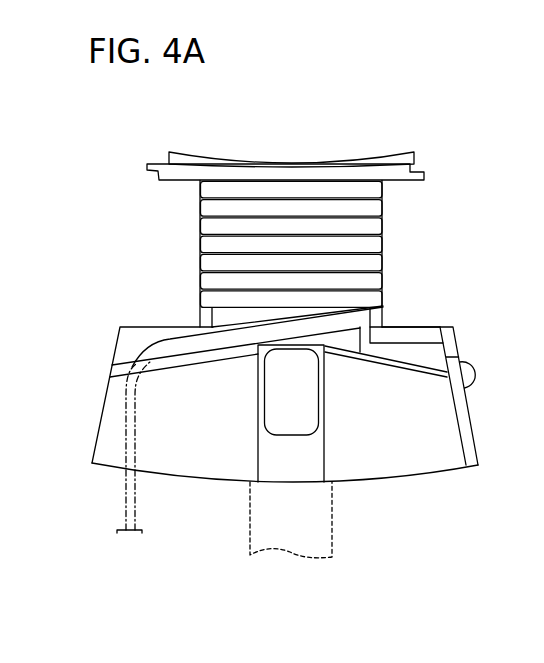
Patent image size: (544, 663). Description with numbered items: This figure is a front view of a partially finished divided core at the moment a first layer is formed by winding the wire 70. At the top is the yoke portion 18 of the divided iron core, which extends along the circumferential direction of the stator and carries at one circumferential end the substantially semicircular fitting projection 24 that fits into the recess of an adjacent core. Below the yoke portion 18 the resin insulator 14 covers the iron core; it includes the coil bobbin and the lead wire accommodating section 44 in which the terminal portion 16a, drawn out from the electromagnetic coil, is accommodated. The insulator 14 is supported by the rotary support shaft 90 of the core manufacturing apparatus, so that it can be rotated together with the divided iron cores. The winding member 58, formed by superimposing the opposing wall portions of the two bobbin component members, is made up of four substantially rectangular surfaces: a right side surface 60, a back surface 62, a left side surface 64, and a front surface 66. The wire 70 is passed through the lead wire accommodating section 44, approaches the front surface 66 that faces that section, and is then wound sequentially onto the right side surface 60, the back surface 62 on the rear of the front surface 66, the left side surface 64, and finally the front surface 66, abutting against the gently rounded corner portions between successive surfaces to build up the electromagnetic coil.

The insulator 14 is at (453, 327).
The terminal portion 16a is at (124, 499).
The yoke portion 18 is at (357, 157).
The fitting projection 24 is at (473, 376).
The lead wire accommodating section 44 is at (424, 466).
The winding member 58 is at (358, 212).
The right side surface 60 is at (370, 227).
The back surface 62 is at (250, 175).
The left side surface 64 is at (213, 227).
The front surface 66 is at (293, 210).
The wire 70 is at (384, 315).
The rotary support shaft 90 is at (333, 528).